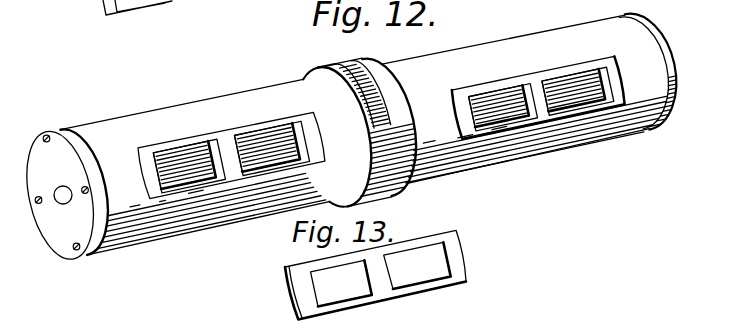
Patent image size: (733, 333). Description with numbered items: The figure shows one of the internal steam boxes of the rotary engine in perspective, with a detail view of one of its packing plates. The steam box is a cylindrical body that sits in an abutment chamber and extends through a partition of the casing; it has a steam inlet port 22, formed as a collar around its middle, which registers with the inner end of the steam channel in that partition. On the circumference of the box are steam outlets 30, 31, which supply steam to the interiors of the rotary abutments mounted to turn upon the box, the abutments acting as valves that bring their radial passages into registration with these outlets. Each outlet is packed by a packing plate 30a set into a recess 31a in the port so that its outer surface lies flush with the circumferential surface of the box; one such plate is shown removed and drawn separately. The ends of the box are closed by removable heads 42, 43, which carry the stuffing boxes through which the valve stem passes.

In FIG. 12, the steam inlet port 22 is at (336, 66).
In FIG. 12, the steam outlet 30 is at (187, 160).
In FIG. 12, the packing plate 30a is at (260, 142).
In FIG. 13, the packing plate 30a is at (440, 234).
In FIG. 12, the steam outlet 31 is at (505, 90).
In FIG. 12, the recess 31a is at (573, 68).
In FIG. 12, the removable head 42 is at (63, 129).
In FIG. 12, the removable head 43 is at (639, 28).